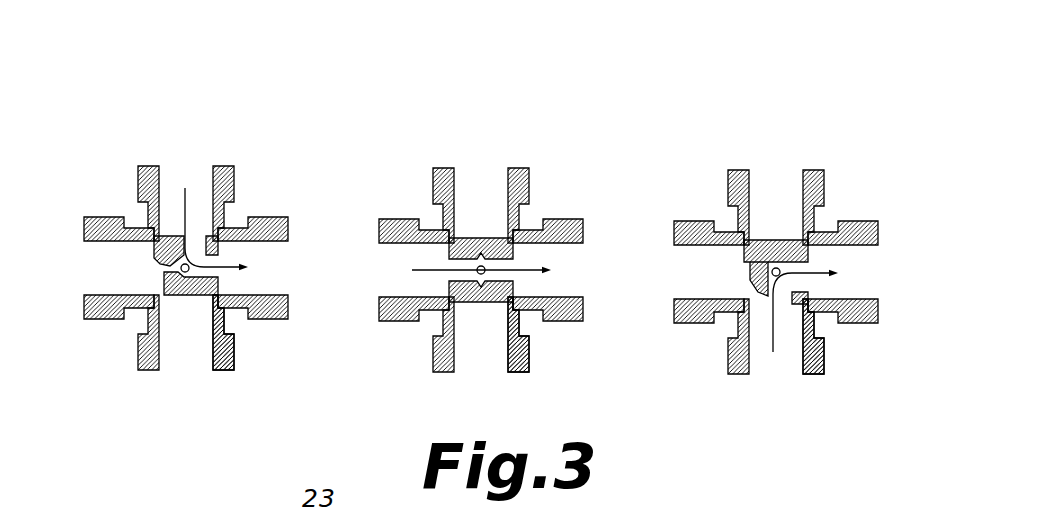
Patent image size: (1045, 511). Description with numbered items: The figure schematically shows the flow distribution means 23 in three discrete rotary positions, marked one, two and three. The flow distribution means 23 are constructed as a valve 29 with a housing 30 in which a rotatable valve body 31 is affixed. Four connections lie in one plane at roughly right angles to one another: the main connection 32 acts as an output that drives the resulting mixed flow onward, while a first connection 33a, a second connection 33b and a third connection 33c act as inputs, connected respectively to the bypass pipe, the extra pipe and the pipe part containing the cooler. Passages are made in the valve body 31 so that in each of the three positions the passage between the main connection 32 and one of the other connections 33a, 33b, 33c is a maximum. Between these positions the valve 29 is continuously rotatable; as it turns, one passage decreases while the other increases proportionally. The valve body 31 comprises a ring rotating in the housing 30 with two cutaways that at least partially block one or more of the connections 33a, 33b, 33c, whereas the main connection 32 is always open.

The flow distribution means 23 is at (487, 228).
The valve 29 is at (487, 272).
The housing 30 is at (565, 342).
The rotatable valve body 31 is at (453, 204).
The main connection 32 is at (562, 249).
The first connection 33a is at (480, 179).
The second connection 33b is at (401, 247).
The third connection 33c is at (468, 363).